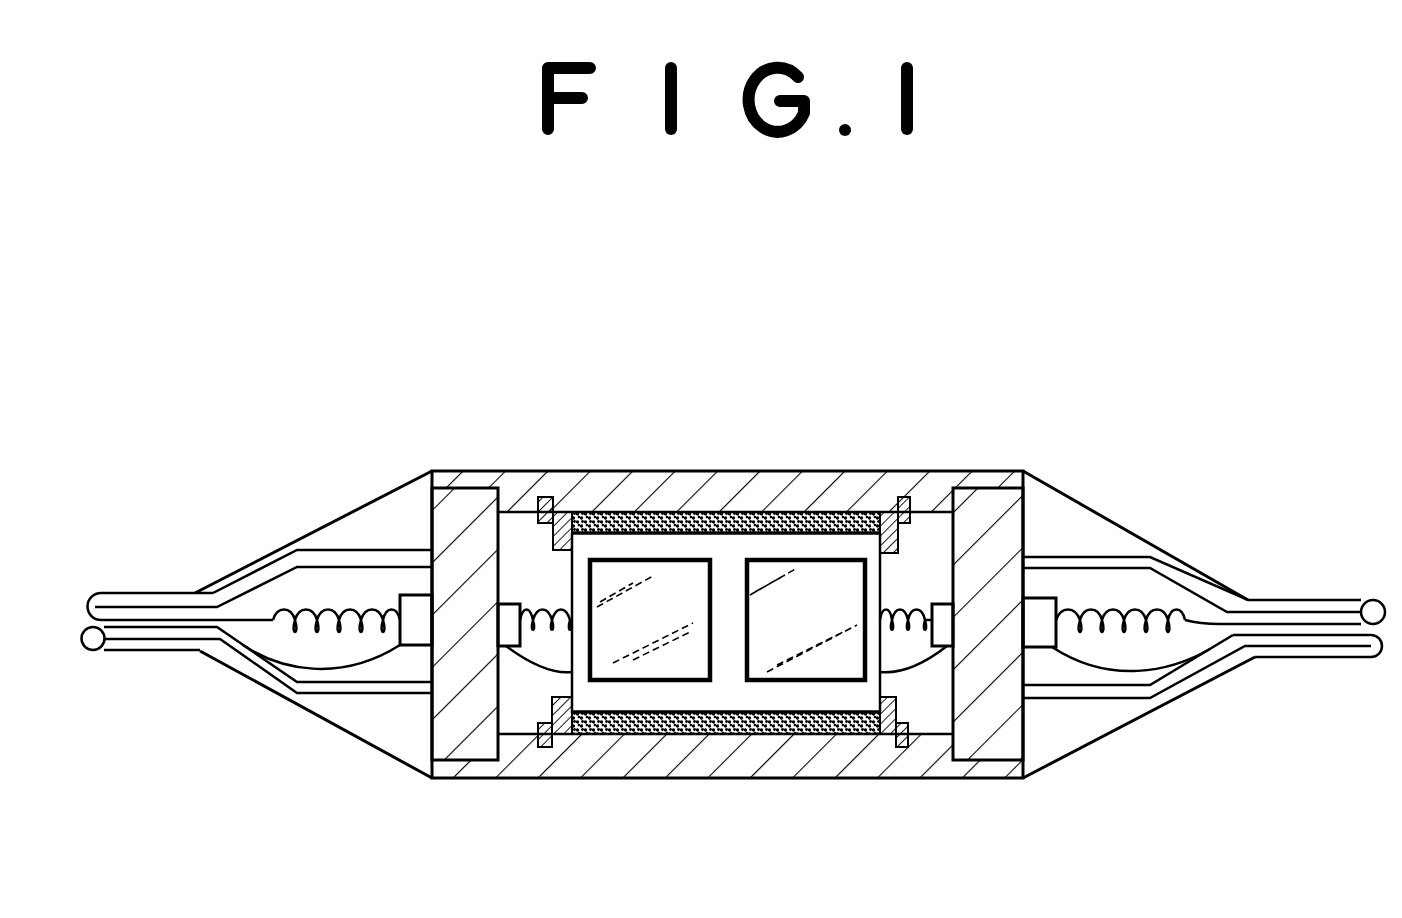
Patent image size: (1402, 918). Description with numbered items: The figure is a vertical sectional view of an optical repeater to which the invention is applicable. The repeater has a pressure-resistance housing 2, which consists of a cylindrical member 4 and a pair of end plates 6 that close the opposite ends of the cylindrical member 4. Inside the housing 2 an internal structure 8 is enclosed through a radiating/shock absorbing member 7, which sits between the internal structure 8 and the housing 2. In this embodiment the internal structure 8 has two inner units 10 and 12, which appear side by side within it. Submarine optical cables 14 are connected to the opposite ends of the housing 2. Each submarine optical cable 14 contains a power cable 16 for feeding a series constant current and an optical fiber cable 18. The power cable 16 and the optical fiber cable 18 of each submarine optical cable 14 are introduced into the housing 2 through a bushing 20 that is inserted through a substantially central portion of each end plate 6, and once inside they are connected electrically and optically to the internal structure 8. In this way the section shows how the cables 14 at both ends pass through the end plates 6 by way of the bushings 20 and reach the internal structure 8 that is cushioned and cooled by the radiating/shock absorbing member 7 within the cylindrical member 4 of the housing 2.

The pressure-resistance housing 2 is at (650, 427).
The cylindrical member 4 is at (735, 496).
The end plate 6 is at (418, 748).
The radiating/shock absorbing member 7 is at (845, 520).
The internal structure 8 is at (725, 698).
The inner unit 10 is at (627, 682).
The inner unit 12 is at (817, 682).
The submarine optical cable 14 is at (147, 592).
The power cable 16 is at (528, 604).
The optical fiber cable 18 is at (260, 650).
The bushing 20 is at (410, 600).